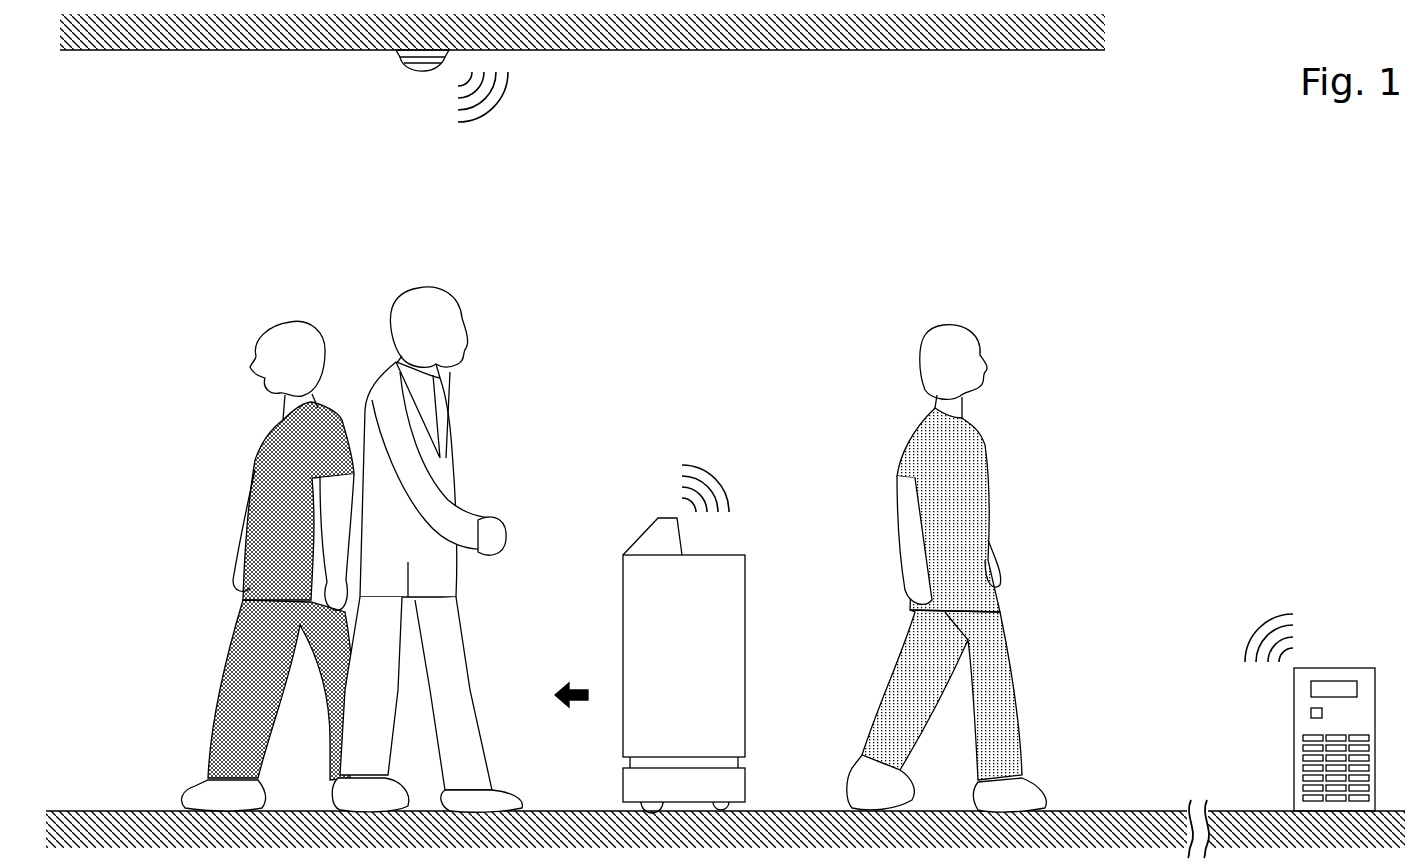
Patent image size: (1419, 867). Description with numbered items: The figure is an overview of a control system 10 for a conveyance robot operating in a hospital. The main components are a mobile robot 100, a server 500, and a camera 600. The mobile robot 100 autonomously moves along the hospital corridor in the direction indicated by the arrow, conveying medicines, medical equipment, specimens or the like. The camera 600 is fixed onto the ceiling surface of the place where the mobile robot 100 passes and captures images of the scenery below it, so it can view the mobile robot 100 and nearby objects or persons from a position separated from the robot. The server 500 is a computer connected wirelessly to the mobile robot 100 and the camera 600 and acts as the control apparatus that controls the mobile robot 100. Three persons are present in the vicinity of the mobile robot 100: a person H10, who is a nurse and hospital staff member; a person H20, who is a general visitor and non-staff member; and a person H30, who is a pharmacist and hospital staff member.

The control system 10 is at (1128, 133).
The camera 600 is at (402, 62).
The person H10 is at (290, 320).
The person H20 is at (445, 287).
The person H30 is at (957, 323).
The mobile robot 100 is at (623, 555).
The server 500 is at (1345, 668).